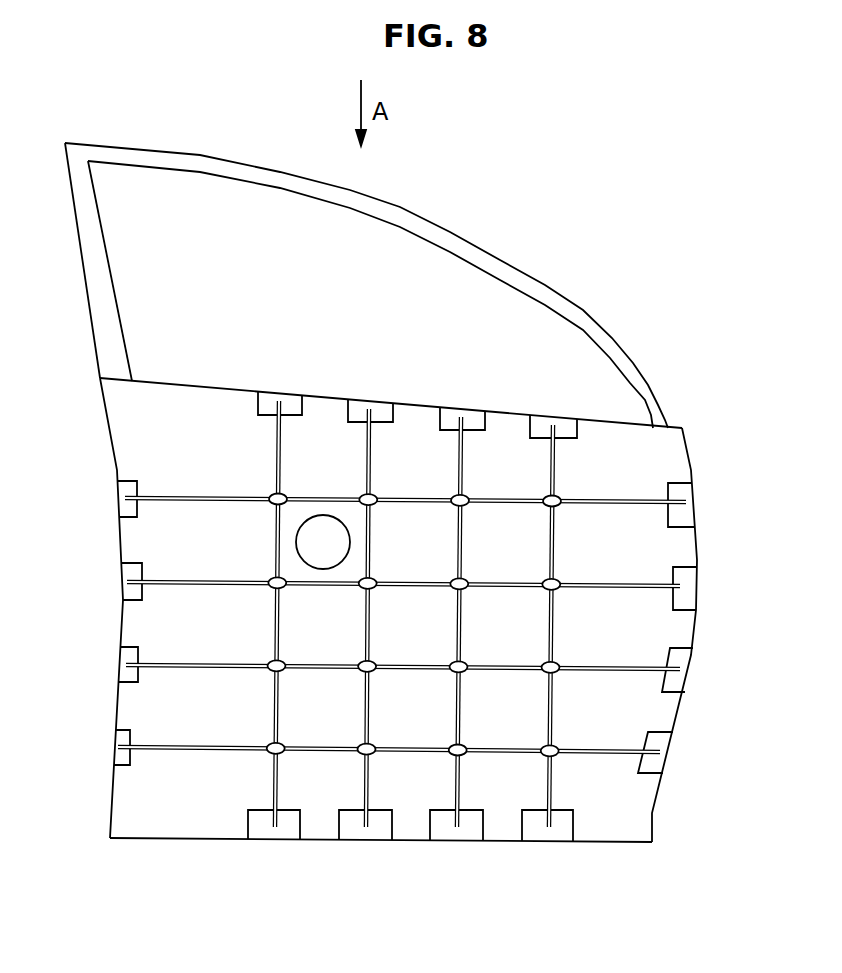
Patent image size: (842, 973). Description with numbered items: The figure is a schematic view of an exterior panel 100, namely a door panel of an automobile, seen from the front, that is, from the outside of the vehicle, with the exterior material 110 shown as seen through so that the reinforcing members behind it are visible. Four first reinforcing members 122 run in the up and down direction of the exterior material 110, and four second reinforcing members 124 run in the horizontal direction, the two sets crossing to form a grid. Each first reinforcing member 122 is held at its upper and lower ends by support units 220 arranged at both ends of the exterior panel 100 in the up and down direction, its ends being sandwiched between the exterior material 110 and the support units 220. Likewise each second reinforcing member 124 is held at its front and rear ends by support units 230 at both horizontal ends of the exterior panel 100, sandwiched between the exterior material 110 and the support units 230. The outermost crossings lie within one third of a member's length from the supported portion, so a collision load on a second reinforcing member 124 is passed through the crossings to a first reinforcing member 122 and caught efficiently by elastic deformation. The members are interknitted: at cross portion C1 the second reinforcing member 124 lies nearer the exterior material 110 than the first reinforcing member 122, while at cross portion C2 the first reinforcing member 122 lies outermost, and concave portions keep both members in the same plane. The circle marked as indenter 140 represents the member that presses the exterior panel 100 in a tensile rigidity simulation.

The exterior panel 100 is at (711, 403).
The exterior material 110 is at (672, 448).
The first reinforcing member 122 is at (277, 817).
The second reinforcing member 124 is at (688, 497).
The indenter 140 is at (325, 530).
The support unit 220 is at (268, 392).
The support unit 230 is at (127, 509).
The cross portion C1 is at (276, 495).
The cross portion C2 is at (369, 578).